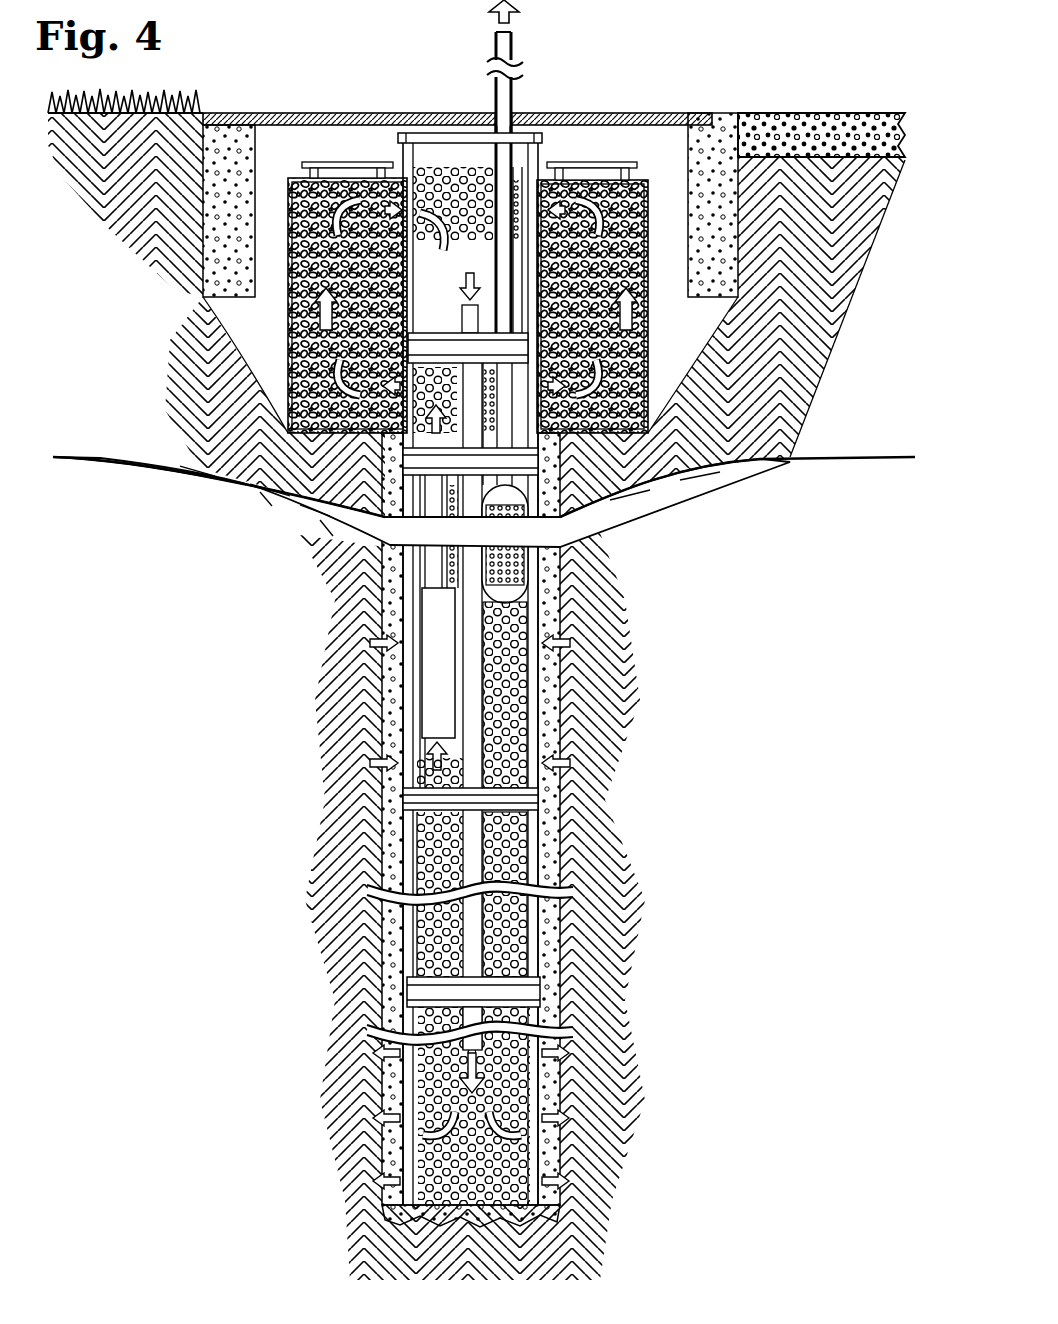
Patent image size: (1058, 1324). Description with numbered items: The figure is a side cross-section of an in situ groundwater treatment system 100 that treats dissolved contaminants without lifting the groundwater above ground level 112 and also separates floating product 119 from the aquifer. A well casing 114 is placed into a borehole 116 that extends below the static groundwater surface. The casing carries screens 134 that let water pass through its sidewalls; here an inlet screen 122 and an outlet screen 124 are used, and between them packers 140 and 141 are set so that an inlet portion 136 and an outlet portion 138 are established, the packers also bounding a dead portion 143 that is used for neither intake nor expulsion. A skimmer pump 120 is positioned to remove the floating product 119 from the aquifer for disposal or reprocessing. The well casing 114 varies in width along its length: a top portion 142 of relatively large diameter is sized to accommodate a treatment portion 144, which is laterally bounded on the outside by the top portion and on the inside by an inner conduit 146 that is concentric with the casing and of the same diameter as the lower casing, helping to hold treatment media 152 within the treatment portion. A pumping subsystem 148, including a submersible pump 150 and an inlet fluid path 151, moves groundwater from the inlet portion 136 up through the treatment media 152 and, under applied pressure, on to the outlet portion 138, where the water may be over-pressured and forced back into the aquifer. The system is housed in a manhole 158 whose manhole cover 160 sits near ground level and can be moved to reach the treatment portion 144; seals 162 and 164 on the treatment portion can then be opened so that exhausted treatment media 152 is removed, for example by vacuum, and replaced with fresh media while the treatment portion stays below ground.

The groundwater treatment system 100 is at (270, 50).
The ground level 112 is at (790, 112).
The well casing 114 is at (545, 558).
The borehole 116 is at (377, 727).
The floating product 119 is at (790, 456).
The skimmer pump 120 is at (517, 573).
The inlet screen 122 is at (503, 652).
The outlet screen 124 is at (513, 1060).
The screens 134 is at (427, 855).
The inlet portion 136 is at (395, 632).
The outlet portion 138 is at (548, 1137).
The packer 140 is at (517, 803).
The packer 141 is at (513, 997).
The top portion 142 is at (290, 350).
The dead portion 143 is at (555, 978).
The treatment portion 144 is at (288, 258).
The inner conduit 146 is at (410, 307).
The pumping subsystem 148 is at (436, 681).
The submersible pump 150 is at (433, 617).
The inlet fluid path 151 is at (433, 567).
The treatment media 152 is at (293, 333).
The manhole 158 is at (374, 108).
The manhole cover 160 is at (605, 112).
The seal 162 is at (337, 162).
The seal 164 is at (605, 162).